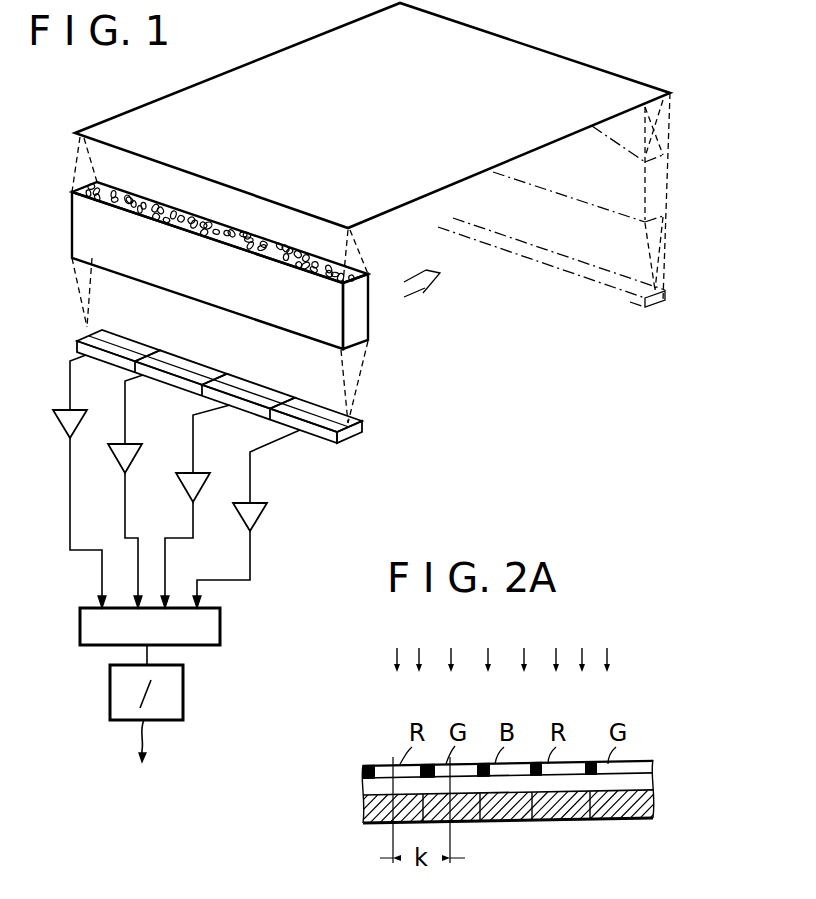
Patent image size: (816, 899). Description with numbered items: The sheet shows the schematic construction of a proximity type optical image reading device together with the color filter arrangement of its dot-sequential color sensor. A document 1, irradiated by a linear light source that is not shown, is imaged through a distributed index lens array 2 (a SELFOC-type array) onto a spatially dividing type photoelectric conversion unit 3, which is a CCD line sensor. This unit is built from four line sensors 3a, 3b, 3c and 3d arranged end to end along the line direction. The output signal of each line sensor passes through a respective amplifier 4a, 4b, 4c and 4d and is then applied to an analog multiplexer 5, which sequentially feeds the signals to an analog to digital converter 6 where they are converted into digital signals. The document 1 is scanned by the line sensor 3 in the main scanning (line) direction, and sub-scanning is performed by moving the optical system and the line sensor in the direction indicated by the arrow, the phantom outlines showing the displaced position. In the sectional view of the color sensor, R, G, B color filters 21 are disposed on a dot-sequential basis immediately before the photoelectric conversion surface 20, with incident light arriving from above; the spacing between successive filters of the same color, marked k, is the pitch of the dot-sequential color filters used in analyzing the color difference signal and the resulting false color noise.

In FIG. 1, the document 1 is at (583, 62).
In FIG. 1, the distributed index lens array 2 is at (72, 230).
In FIG. 1, the spatially dividing type photoelectric conversion unit 3 is at (46, 331).
In FIG. 1, the line sensor 3a is at (130, 325).
In FIG. 1, the line sensor 3b is at (188, 345).
In FIG. 1, the line sensor 3c is at (256, 368).
In FIG. 1, the line sensor 3d is at (317, 402).
In FIG. 1, the amplifier 4a is at (58, 424).
In FIG. 1, the amplifier 4b is at (116, 450).
In FIG. 1, the amplifier 4c is at (184, 477).
In FIG. 1, the amplifier 4d is at (239, 508).
In FIG. 1, the analog multiplexer 5 is at (220, 631).
In FIG. 1, the analog to digital converter 6 is at (183, 696).
In FIG. 2A, the photoelectric conversion surface 20 is at (653, 818).
In FIG. 2A, the R, G, B color filters 21 is at (655, 768).